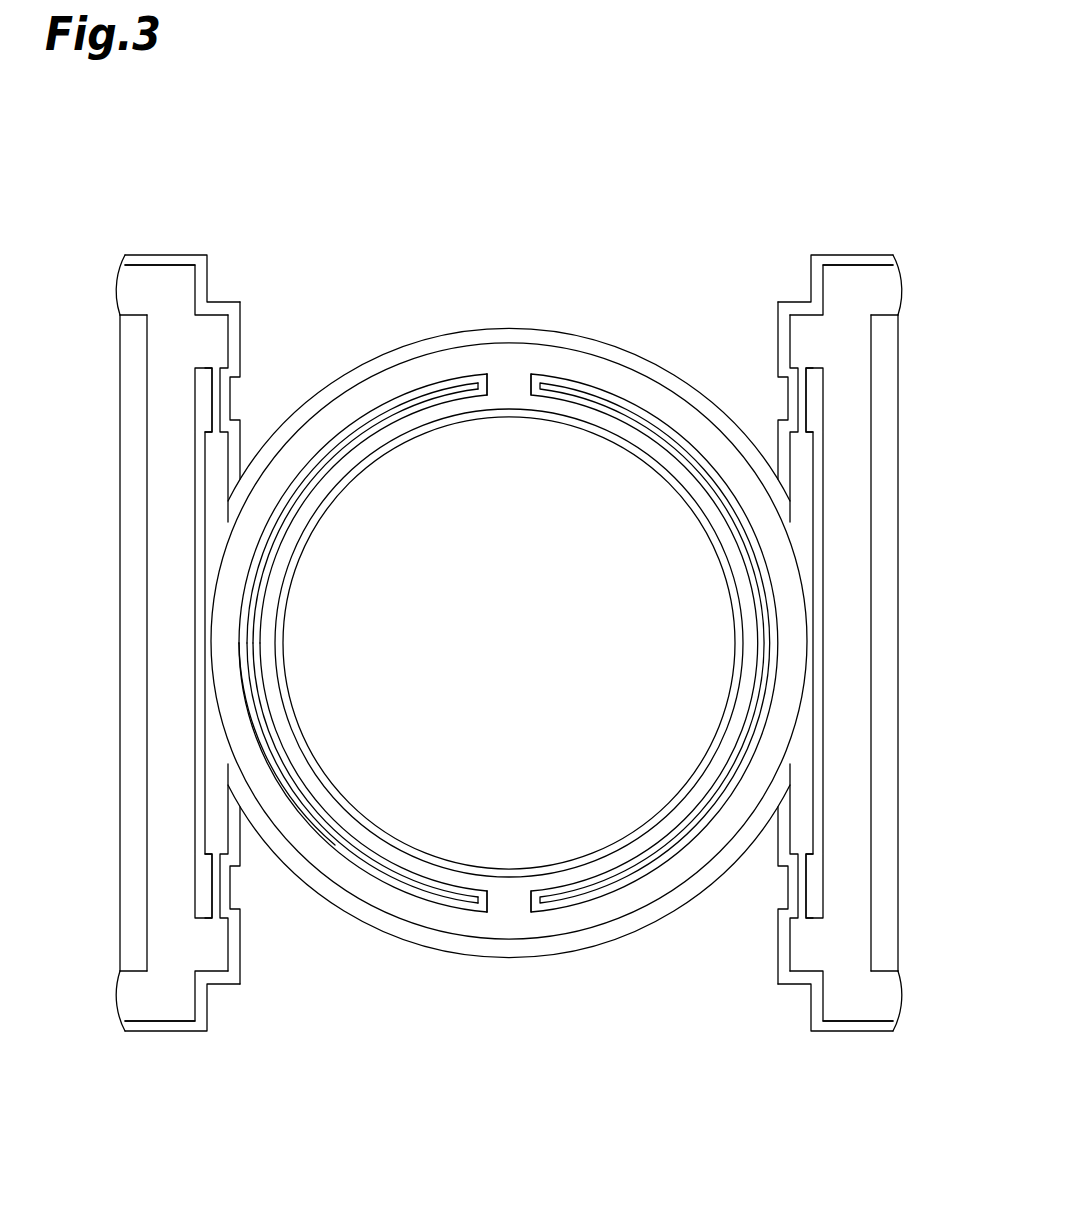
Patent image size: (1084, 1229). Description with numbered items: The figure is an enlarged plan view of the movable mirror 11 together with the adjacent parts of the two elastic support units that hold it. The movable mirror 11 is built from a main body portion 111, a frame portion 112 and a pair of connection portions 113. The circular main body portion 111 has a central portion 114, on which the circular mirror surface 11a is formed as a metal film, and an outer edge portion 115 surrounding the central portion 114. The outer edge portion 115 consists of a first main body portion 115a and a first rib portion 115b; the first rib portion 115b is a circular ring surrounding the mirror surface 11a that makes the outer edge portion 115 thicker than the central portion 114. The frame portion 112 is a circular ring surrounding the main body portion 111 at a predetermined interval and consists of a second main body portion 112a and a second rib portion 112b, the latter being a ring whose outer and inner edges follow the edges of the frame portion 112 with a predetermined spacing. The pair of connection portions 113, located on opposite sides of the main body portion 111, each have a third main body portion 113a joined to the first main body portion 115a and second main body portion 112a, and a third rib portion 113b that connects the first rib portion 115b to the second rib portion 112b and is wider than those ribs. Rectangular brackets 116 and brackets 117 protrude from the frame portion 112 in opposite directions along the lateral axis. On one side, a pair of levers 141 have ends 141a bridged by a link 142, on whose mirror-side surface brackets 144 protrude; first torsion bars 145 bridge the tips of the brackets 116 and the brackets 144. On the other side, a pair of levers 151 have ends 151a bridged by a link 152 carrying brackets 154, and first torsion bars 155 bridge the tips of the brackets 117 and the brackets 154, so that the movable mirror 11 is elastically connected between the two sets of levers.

The movable mirror 11 is at (650, 924).
The mirror surface 11a is at (539, 626).
The main body portion 111 is at (335, 845).
The frame portion 112 is at (368, 895).
The second main body portion 112a is at (416, 920).
The second rib portion 112b is at (365, 910).
The connection portion 113 is at (567, 378).
The third main body portion 113a is at (538, 390).
The third rib portion 113b is at (507, 388).
The central portion 114 is at (469, 450).
The outer edge portion 115 is at (410, 437).
The first main body portion 115a is at (354, 438).
The first rib portion 115b is at (434, 413).
The bracket 116 is at (811, 464).
The bracket 117 is at (207, 464).
The lever 141 is at (840, 643).
The end of lever 141a is at (860, 275).
The link 142 is at (871, 578).
The bracket 144 is at (803, 312).
The first torsion bar 145 is at (806, 394).
The lever 151 is at (178, 643).
The end of lever 151a is at (160, 275).
The link 152 is at (147, 578).
The bracket 154 is at (216, 312).
The first torsion bar 155 is at (212, 394).